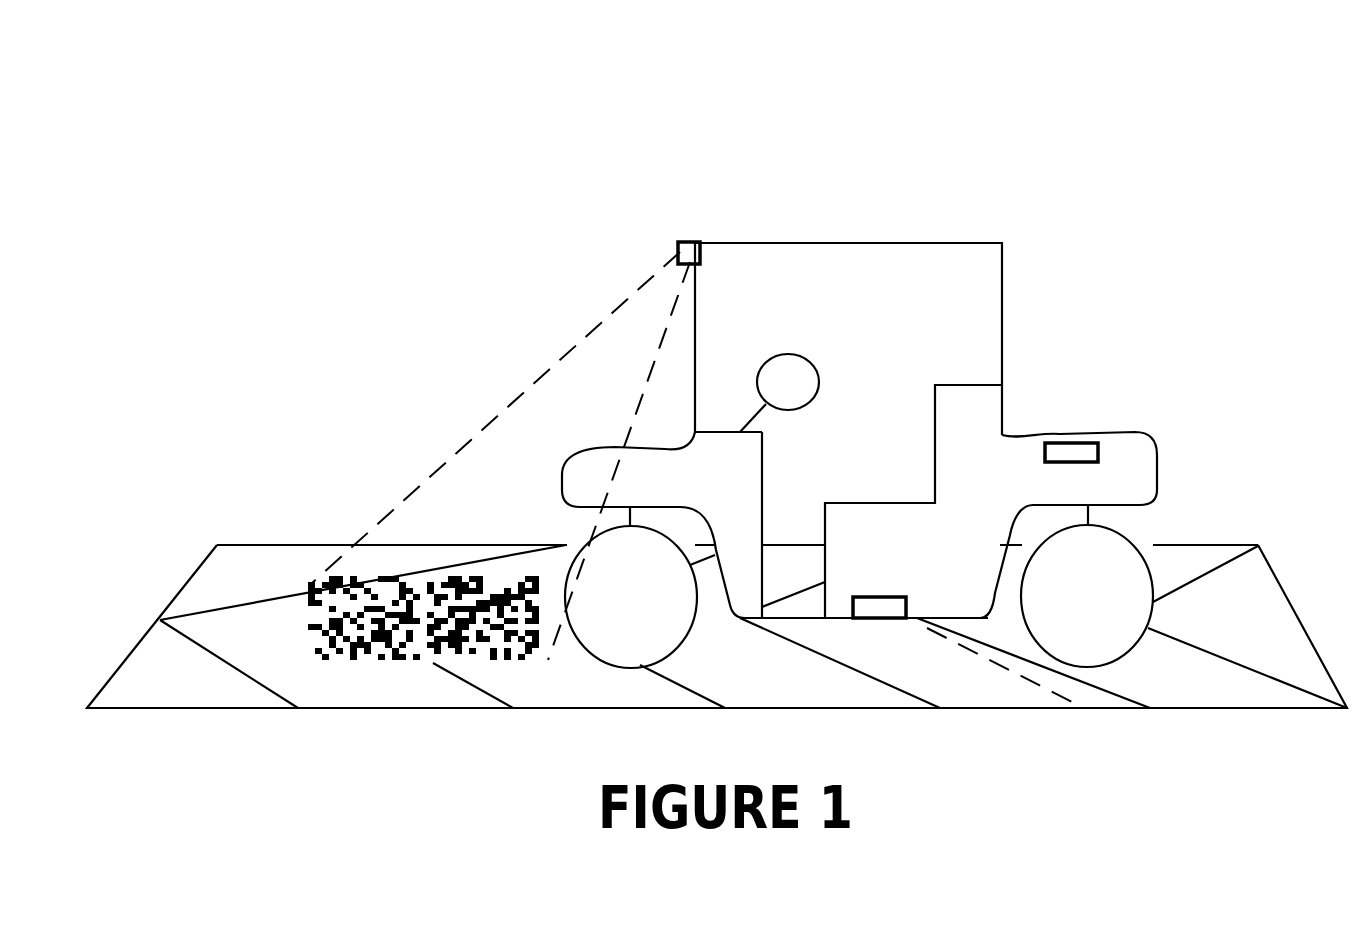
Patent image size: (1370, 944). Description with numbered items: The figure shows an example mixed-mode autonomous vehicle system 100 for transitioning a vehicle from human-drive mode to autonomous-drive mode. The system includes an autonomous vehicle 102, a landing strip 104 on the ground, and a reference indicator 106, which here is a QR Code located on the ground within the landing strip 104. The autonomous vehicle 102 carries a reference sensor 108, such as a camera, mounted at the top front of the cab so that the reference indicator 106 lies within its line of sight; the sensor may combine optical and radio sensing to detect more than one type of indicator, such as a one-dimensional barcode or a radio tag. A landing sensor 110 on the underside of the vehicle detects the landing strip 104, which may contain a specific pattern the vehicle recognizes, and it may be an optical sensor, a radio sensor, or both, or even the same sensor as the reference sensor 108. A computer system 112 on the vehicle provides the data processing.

The mixed-mode autonomous vehicle system 100 is at (382, 99).
The autonomous vehicle 102 is at (837, 243).
The landing strip 104 is at (1190, 580).
The reference indicator 106 is at (403, 573).
The reference sensor 108 is at (688, 241).
The landing sensor 110 is at (857, 597).
The computer system 112 is at (1050, 443).